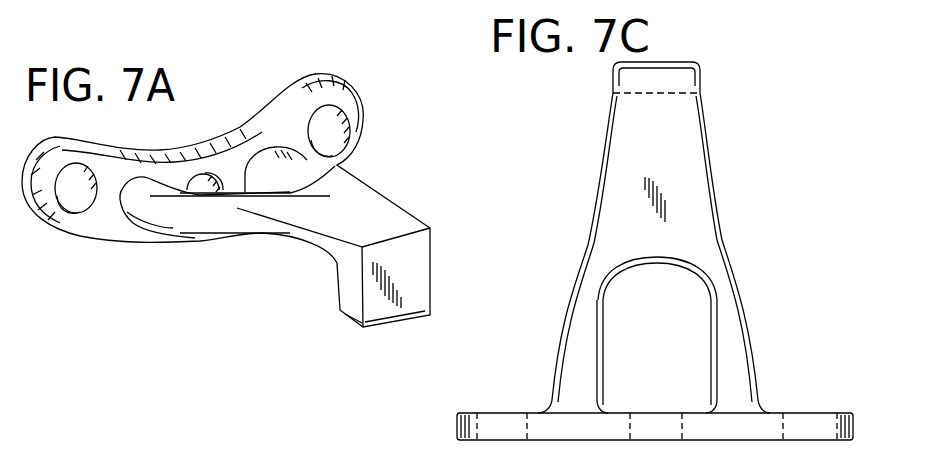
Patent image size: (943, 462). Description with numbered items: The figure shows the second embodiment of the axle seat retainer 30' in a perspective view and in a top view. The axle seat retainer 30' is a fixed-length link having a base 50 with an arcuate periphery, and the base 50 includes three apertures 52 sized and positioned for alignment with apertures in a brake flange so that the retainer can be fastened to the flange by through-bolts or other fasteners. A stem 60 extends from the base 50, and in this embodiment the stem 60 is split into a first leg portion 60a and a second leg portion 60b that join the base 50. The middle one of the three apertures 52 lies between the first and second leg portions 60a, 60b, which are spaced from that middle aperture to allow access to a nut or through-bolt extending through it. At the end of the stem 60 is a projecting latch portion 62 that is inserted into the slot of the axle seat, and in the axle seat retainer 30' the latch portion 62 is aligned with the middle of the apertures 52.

In FIG. 7A, the axle seat retainer 30' is at (226, 186).
In FIG. 7C, the axle seat retainer 30' is at (719, 167).
In FIG. 7A, the base 50 is at (337, 92).
In FIG. 7C, the base 50 is at (462, 428).
In FIG. 7A, the apertures 52 is at (80, 205).
In FIG. 7C, the apertures 52 is at (487, 410).
In FIG. 7A, the stem 60 is at (356, 206).
In FIG. 7C, the stem 60 is at (688, 207).
In FIG. 7A, the first leg portion 60a is at (183, 227).
In FIG. 7C, the first leg portion 60a is at (735, 353).
In FIG. 7A, the second leg portion 60b is at (293, 160).
In FIG. 7C, the second leg portion 60b is at (573, 352).
In FIG. 7A, the latch portion 62 is at (405, 302).
In FIG. 7C, the latch portion 62 is at (643, 97).